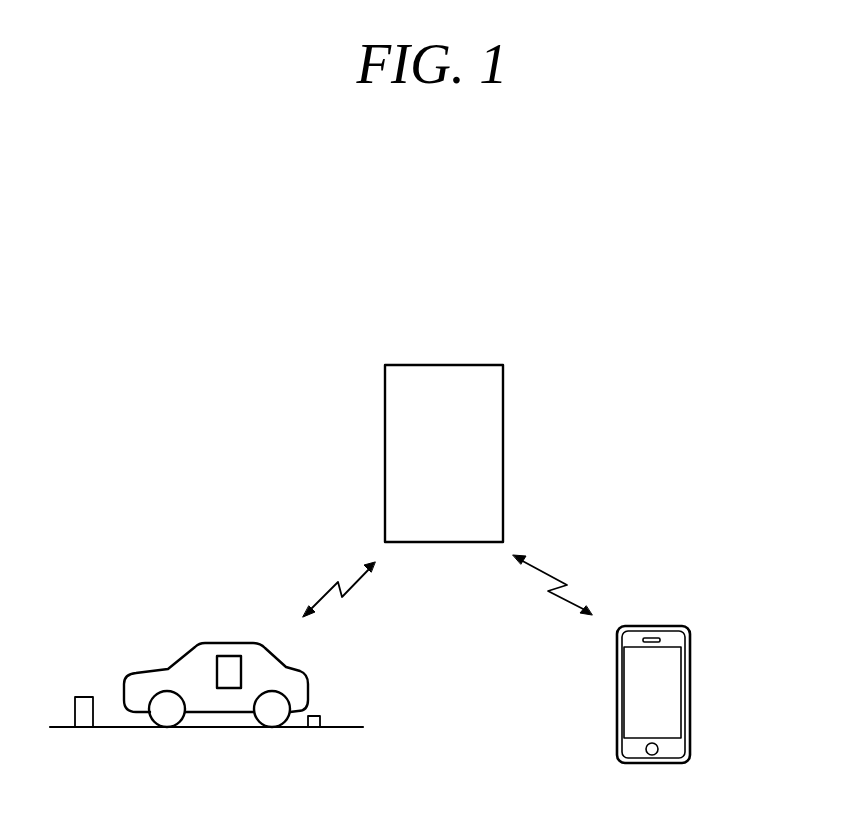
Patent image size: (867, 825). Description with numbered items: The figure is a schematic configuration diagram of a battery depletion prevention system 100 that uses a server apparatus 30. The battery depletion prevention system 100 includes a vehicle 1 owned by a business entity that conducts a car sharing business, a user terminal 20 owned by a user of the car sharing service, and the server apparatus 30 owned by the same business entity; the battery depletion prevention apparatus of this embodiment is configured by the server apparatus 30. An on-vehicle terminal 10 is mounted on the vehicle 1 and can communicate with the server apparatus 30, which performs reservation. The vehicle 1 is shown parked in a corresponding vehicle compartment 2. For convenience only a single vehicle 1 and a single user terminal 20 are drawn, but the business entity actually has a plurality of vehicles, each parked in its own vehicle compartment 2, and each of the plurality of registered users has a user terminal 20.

The battery depletion prevention system 100 is at (673, 283).
The vehicle 1 is at (178, 660).
The on-vehicle terminal 10 is at (224, 655).
The vehicle compartment 2 is at (343, 726).
The server apparatus 30 is at (472, 364).
The user terminal 20 is at (690, 680).